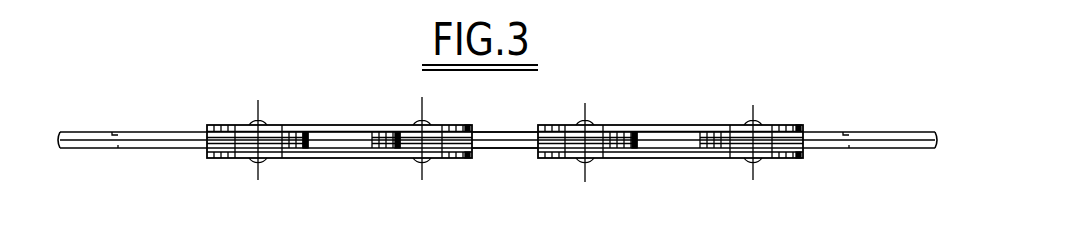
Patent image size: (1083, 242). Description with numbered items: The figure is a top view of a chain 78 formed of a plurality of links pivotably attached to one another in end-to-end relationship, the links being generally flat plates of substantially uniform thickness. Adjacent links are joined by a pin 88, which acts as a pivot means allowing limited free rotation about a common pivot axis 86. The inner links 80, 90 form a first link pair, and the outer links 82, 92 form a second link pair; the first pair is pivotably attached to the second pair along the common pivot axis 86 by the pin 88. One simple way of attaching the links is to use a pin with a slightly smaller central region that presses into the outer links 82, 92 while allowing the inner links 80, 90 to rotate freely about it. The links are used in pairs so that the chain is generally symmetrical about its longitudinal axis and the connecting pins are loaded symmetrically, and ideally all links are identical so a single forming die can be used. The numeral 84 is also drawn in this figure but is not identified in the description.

The chain 78 is at (735, 117).
The inner link 80 is at (526, 158).
The outer link 82 is at (336, 158).
The end plate 84 is at (437, 158).
The common pivot axis 86 is at (410, 158).
The pin 88 is at (422, 180).
The inner link 90 is at (513, 130).
The outer link 92 is at (355, 125).